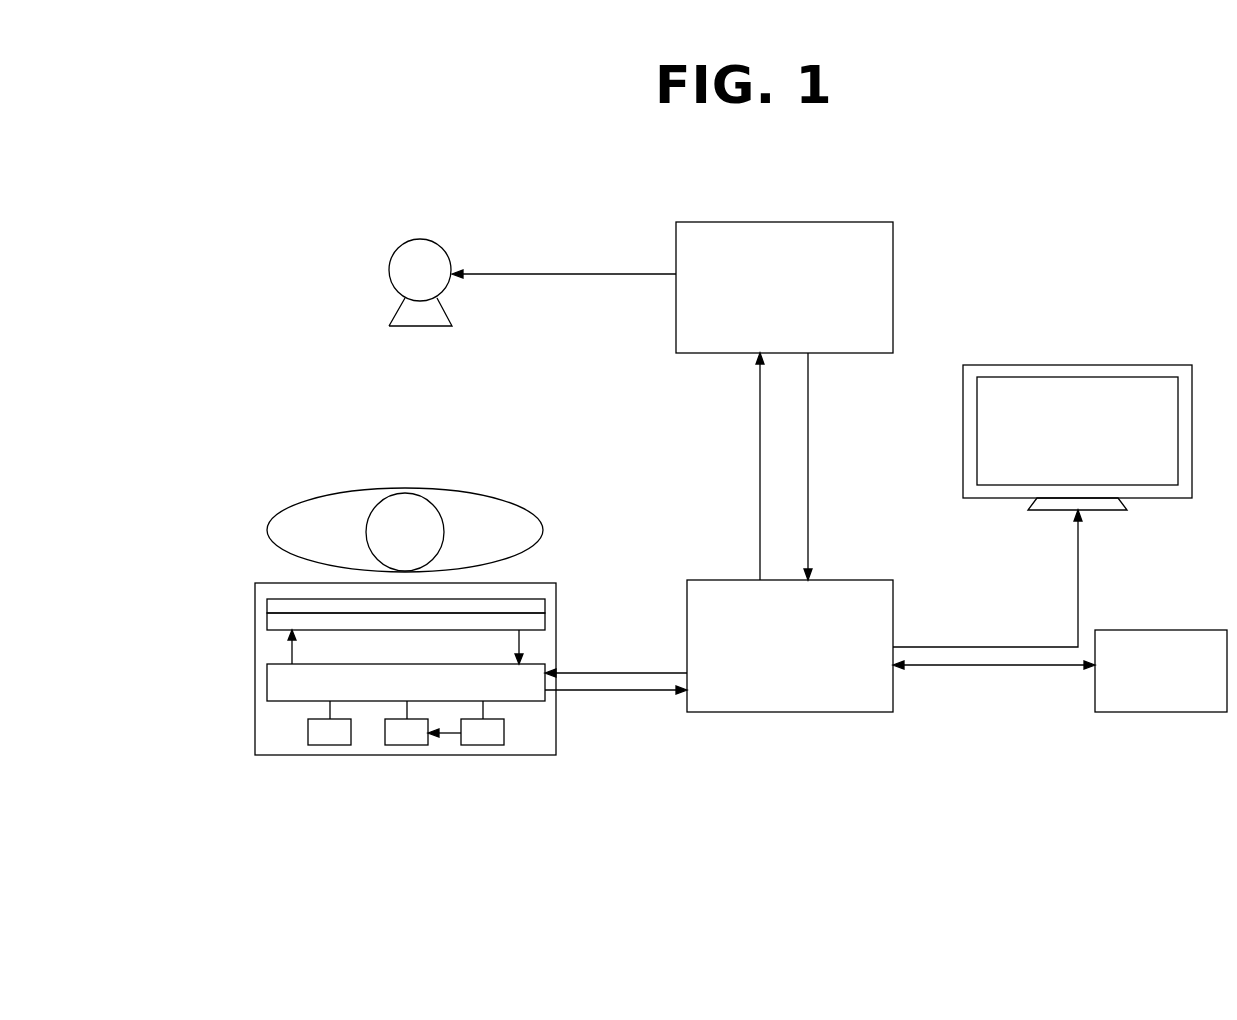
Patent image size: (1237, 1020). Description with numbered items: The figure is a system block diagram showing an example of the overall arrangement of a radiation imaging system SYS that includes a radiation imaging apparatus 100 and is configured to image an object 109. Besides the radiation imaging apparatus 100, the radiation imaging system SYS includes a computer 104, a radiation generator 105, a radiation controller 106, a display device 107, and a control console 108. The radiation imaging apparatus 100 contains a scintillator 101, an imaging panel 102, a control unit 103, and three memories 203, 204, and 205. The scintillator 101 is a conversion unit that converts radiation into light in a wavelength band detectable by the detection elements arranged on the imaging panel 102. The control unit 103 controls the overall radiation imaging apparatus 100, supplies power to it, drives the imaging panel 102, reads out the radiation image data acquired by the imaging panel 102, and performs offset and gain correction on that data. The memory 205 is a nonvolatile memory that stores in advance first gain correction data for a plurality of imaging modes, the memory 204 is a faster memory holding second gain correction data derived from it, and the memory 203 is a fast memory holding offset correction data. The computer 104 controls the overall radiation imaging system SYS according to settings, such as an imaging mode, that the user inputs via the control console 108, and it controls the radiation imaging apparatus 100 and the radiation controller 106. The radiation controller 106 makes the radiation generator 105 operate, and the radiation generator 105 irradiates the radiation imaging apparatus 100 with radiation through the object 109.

The radiation imaging system SYS is at (1040, 181).
The radiation imaging apparatus 100 is at (255, 742).
The scintillator 101 is at (267, 606).
The imaging panel 102 is at (267, 623).
The control unit 103 is at (267, 685).
The computer 104 is at (860, 580).
The radiation generator 105 is at (413, 240).
The radiation controller 106 is at (893, 250).
The display device 107 is at (1165, 365).
The control console 108 is at (1200, 630).
The object 109 is at (317, 498).
The memory 203 is at (332, 755).
The memory 204 is at (408, 755).
The memory 205 is at (484, 755).